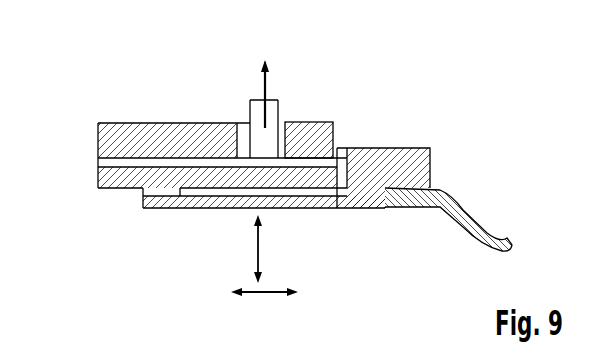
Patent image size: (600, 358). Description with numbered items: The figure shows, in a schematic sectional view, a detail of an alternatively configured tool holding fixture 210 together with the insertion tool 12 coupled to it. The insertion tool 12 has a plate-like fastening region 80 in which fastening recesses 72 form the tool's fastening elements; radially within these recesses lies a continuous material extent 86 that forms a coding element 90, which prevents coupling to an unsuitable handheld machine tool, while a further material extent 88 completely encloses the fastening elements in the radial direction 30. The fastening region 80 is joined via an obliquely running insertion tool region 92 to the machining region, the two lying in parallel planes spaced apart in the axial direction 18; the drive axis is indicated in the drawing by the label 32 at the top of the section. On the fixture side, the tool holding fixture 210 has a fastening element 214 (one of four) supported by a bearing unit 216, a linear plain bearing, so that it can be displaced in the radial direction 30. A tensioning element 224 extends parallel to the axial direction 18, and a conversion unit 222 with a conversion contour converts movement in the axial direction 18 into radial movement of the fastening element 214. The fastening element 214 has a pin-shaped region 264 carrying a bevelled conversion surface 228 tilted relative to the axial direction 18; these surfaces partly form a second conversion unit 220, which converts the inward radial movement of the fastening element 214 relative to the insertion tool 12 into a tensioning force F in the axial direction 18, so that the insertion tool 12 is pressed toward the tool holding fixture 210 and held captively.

The insertion tool 12 is at (453, 191).
The axial direction 18 is at (261, 248).
The radial direction 30 is at (262, 296).
The actuating element 32 is at (312, 49).
The tensioning force F is at (266, 86).
The fastening recesses 72 is at (124, 244).
The fastening region 80 is at (96, 190).
The material extent 86 is at (218, 194).
The further material extent 88 is at (118, 198).
The coding element 90 is at (205, 186).
The insertion tool region 92 is at (482, 222).
The tool holding fixture 210 is at (220, 246).
The fastening element 214 is at (160, 178).
The bearing unit 216 is at (86, 153).
The conversion unit 220 is at (172, 218).
The conversion unit 222 is at (292, 172).
The tensioning element 224 is at (277, 116).
The conversion surface 228 is at (189, 196).
The pin-shaped region 264 is at (160, 197).